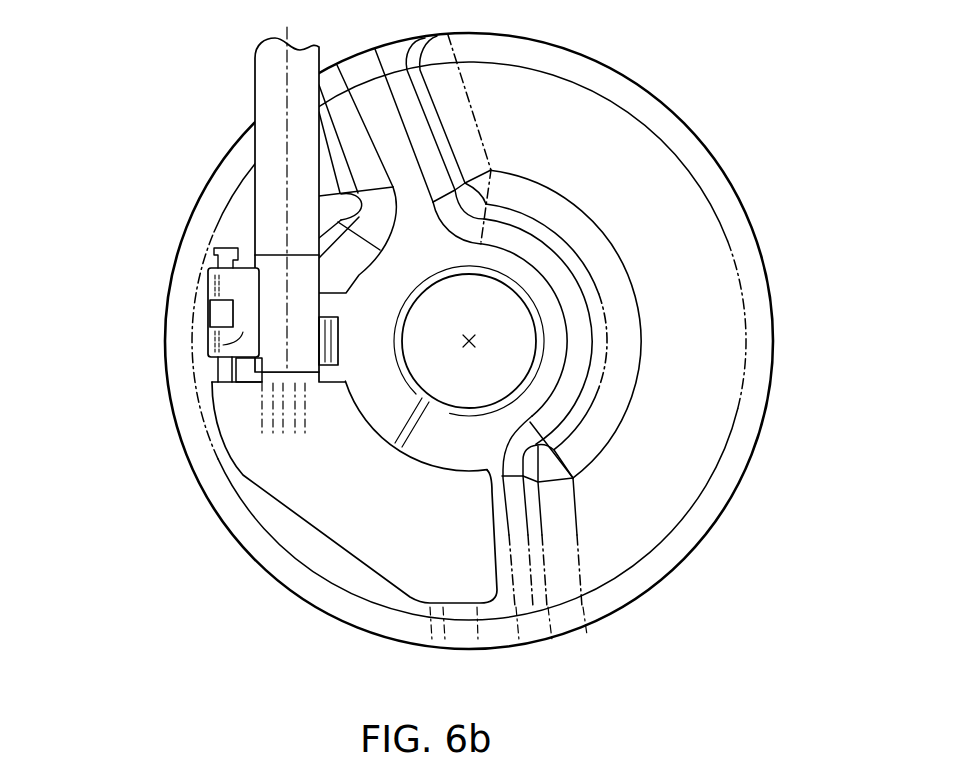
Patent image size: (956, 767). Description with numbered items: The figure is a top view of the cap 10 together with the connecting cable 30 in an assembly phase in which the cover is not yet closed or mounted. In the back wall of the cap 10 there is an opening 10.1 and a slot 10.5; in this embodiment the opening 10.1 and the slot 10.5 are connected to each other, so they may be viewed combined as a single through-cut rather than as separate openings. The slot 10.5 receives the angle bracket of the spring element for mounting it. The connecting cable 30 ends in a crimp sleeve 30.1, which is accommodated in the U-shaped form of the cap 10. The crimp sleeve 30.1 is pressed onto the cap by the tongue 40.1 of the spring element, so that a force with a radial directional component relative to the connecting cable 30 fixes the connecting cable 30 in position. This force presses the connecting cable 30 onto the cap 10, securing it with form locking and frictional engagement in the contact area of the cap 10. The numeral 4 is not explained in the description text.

The cap 10 is at (757, 318).
The opening 10.1 is at (308, 490).
The slot 10.5 is at (215, 250).
The sensor 4 is at (212, 306).
The tongue 40.1 is at (212, 381).
The connecting cable 30 is at (263, 118).
The crimp sleeve 30.1 is at (195, 388).